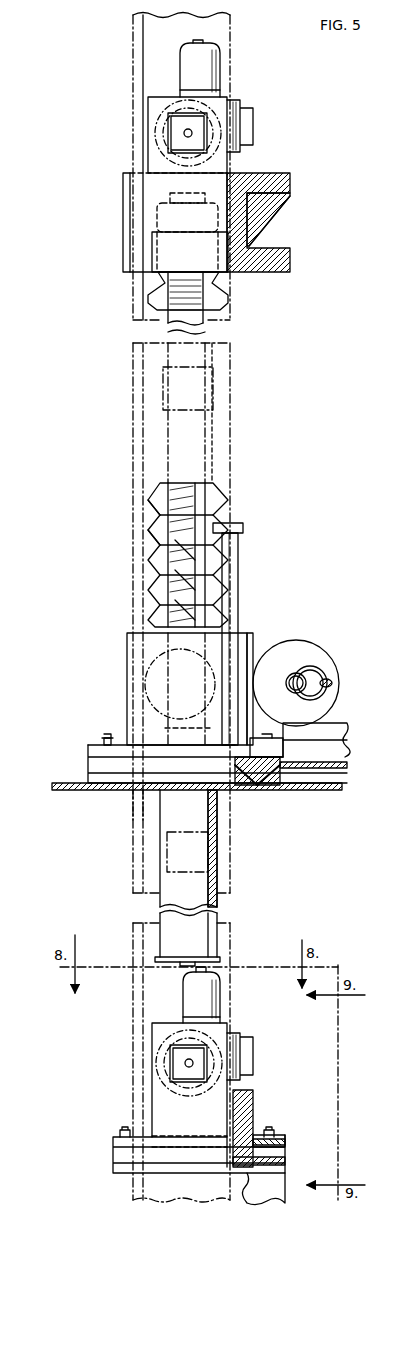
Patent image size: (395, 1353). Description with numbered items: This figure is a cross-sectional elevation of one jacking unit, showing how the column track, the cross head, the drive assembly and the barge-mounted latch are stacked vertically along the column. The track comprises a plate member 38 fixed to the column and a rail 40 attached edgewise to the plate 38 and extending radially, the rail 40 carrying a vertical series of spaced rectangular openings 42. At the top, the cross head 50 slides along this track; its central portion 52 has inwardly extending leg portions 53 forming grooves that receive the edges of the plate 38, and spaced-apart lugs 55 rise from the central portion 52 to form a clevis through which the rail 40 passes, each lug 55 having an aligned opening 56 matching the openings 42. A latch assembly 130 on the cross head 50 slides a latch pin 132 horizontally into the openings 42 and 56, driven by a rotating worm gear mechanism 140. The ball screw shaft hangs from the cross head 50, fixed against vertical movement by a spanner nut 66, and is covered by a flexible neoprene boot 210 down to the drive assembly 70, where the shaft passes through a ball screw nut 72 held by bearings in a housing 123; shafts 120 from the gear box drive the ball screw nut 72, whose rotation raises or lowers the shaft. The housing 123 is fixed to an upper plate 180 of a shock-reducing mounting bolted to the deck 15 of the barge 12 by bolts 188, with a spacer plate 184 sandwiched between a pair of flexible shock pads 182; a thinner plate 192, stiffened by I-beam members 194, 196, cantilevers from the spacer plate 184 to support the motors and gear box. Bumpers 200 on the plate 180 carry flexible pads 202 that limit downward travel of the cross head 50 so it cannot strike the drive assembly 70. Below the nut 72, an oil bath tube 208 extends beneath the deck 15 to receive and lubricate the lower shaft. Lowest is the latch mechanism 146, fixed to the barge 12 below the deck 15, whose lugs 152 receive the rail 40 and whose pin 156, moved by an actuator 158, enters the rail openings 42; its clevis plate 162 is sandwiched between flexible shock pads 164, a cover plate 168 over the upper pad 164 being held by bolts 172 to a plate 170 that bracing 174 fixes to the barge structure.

The barge 12 is at (128, 790).
The deck 15 is at (75, 790).
The plate member 38 is at (137, 438).
The rail 40 is at (222, 435).
The openings 42 is at (214, 381).
The cross head 50 is at (262, 172).
The central portion 52 is at (250, 242).
The leg portions 53 is at (126, 245).
The lugs 55 is at (152, 105).
The aligned openings 56 is at (170, 131).
The spanner nuts 66 is at (394, 310).
The drive assembly 70 is at (274, 648).
The ball screw nut 72 is at (175, 538).
The shafts 120 is at (318, 676).
The housings 123 is at (122, 647).
The latch assembly 130 is at (238, 92).
The latch pin 132 is at (196, 124).
The worm gear mechanism 140 is at (186, 62).
The latch mechanism 146 is at (257, 1053).
The lugs 152 is at (155, 1031).
The pin 156 is at (196, 1068).
The actuator 158 is at (196, 1005).
The plate 162 is at (287, 1148).
The shock pads 164 is at (285, 1139).
The cover plate 168 is at (118, 1130).
The plate 170 is at (122, 1177).
The bolts 172 is at (124, 1127).
The bracing 174 is at (283, 1190).
The upper plate 180 is at (120, 740).
The shock pads 182 is at (88, 747).
The spacer plate 184 is at (88, 763).
The bolts 188 is at (104, 735).
The plate 192 is at (328, 775).
The motor mount block 194 is at (313, 728).
The motor mount bracket 196 is at (310, 750).
The bumpers 200 is at (239, 575).
The flexible pads 202 is at (243, 527).
The oil bath tubes 208 is at (200, 888).
The flexible neoprene boot 210 is at (214, 497).